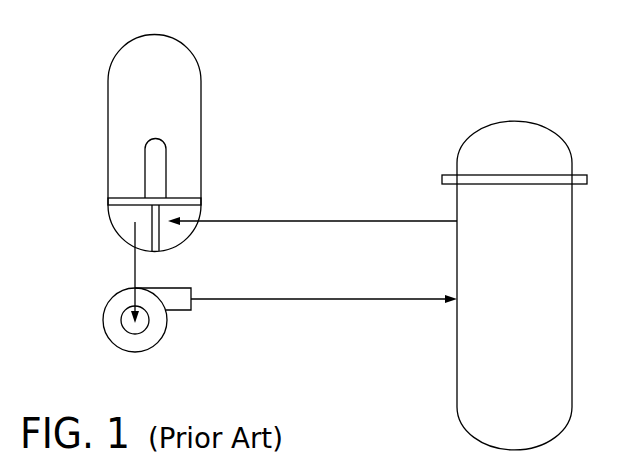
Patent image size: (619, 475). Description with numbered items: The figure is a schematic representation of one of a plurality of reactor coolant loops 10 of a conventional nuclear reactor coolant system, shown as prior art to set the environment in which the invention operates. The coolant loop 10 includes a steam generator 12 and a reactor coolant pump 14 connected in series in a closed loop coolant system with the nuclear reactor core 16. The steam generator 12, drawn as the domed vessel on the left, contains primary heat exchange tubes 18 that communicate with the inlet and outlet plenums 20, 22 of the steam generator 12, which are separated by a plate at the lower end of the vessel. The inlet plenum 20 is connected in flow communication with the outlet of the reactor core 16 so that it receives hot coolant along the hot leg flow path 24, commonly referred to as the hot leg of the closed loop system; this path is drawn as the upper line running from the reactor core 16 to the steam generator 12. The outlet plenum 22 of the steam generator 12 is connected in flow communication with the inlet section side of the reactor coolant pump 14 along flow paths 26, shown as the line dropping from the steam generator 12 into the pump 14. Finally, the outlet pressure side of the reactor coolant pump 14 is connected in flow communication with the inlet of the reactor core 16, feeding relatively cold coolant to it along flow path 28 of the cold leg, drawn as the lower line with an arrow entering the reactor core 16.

The reactor coolant loop 10 is at (378, 144).
The steam generator 12 is at (201, 88).
The reactor coolant pump 14 is at (167, 333).
The nuclear reactor core 16 is at (517, 319).
The primary heat exchange tubes 18 is at (166, 165).
The inlet plenum 20 is at (190, 241).
The outlet plenum 22 is at (118, 216).
The hot leg flow path 24 is at (315, 221).
The flow paths 26 is at (135, 268).
The cold leg flow path 28 is at (315, 298).